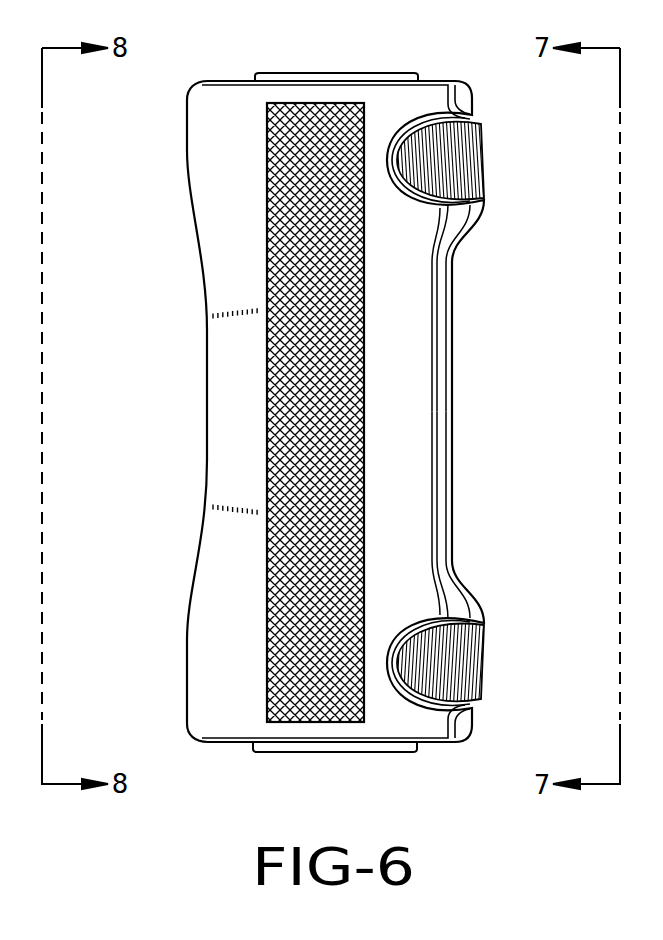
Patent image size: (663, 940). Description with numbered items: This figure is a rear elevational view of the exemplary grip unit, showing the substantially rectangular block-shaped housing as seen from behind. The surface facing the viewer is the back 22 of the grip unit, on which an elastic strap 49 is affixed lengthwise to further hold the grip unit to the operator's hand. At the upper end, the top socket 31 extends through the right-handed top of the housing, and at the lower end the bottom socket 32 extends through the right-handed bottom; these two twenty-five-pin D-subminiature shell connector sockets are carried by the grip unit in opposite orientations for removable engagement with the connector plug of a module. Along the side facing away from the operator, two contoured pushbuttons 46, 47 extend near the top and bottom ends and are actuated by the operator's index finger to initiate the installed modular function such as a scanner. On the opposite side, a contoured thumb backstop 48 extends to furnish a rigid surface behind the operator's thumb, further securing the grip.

The front 22 is at (375, 403).
The top socket 31 is at (325, 77).
The bottom socket 32 is at (327, 752).
The contoured pushbutton 46 is at (462, 160).
The contoured pushbutton 47 is at (452, 667).
The contoured thumb backstop 48 is at (187, 146).
The elastic strap 49 is at (275, 270).